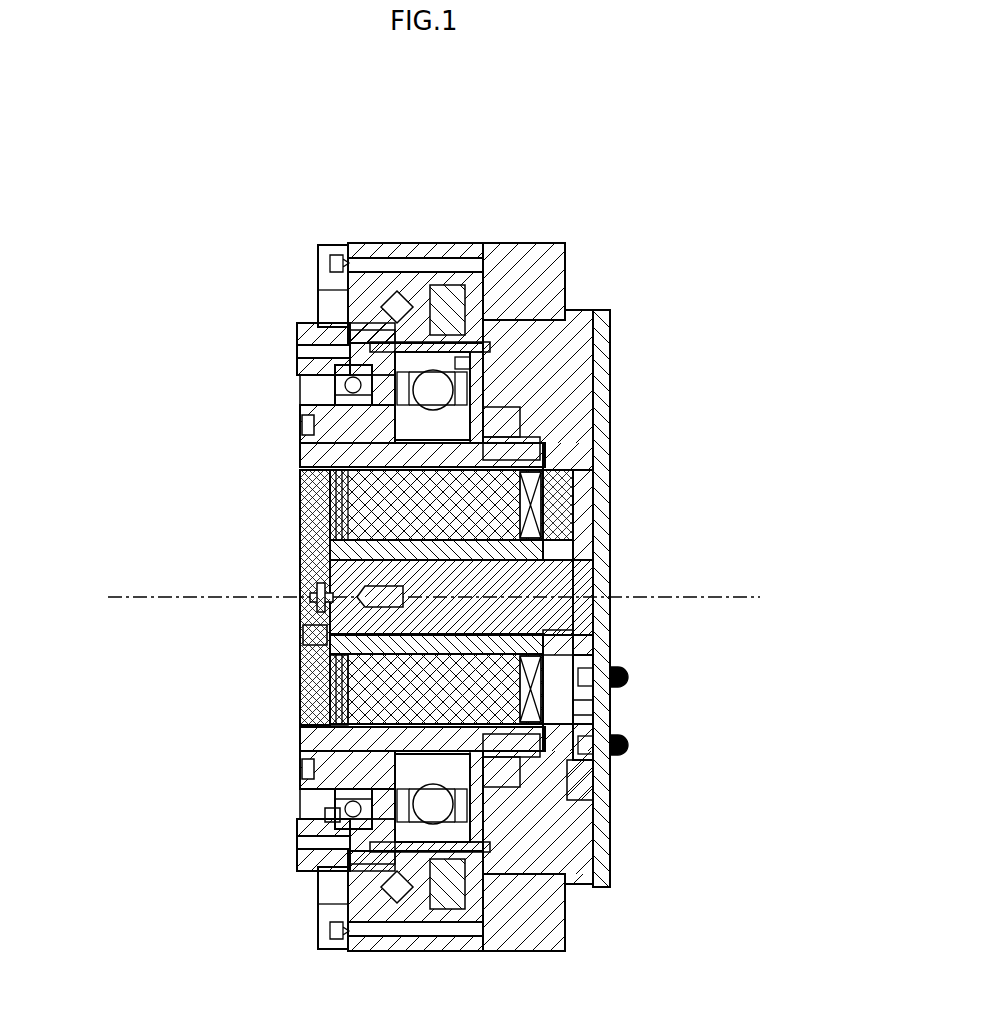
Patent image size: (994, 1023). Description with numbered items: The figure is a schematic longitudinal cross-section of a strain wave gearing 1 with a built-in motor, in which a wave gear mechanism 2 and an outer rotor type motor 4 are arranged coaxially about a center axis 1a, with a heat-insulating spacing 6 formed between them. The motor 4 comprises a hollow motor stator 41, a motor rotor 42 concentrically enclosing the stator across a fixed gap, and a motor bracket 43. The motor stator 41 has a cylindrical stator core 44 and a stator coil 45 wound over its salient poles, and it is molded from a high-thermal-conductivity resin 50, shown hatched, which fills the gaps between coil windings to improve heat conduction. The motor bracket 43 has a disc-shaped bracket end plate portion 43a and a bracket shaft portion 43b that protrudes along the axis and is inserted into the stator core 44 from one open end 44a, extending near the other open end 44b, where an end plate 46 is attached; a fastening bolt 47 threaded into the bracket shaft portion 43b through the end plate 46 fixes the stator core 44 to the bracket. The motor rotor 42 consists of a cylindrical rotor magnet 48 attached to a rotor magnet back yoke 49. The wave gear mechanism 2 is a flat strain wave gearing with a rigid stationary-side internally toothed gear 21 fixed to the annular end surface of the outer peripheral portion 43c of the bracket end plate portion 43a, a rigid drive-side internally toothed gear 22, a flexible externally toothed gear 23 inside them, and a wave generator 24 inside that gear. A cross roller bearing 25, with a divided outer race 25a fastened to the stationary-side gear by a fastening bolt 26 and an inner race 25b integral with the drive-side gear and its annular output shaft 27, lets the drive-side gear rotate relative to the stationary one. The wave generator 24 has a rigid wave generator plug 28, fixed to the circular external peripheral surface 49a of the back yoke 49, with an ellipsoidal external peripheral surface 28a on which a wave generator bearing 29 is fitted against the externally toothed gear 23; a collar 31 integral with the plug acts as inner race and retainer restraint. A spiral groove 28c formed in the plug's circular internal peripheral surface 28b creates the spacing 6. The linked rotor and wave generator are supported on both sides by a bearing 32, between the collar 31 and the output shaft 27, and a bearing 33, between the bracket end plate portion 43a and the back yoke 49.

The strain wave gearing with a built-in motor 1 is at (436, 513).
The center axis 1a is at (110, 588).
The wave gear mechanism 2 is at (262, 362).
The motor 4 is at (272, 512).
The spacing 6 is at (300, 469).
The stationary-side internally toothed gear 21 is at (568, 312).
The drive-side internally toothed gear 22 is at (320, 285).
The externally toothed gear 23 is at (497, 343).
The wave generator 24 is at (565, 400).
The cross roller bearing 25 is at (449, 239).
The outer race 25a is at (410, 236).
The inner race 25b is at (463, 330).
The fastening bolt 26 is at (365, 268).
The output shaft 27 is at (292, 323).
The wave generator plug 28 is at (560, 411).
The ellipsoidal external peripheral surface 28a is at (474, 368).
The circular internal peripheral surface 28b is at (510, 449).
The groove 28c is at (510, 424).
The wave generator bearing 29 is at (478, 346).
The collar 31 is at (300, 403).
The bearing 32 is at (330, 816).
The bearing 33 is at (580, 780).
The motor stator 41 is at (459, 589).
The motor rotor 42 is at (663, 708).
The motor bracket 43 is at (639, 530).
The bracket end plate portion 43a is at (585, 489).
The bracket shaft portion 43b is at (482, 580).
The outer peripheral portion 43c is at (545, 250).
The stator core 44 is at (446, 575).
The open end 44a is at (577, 597).
The open end 44b is at (300, 568).
The stator coil 45 is at (553, 639).
The end plate 46 is at (300, 633).
The fastening bolt 47 is at (300, 596).
The rotor magnet 48 is at (575, 734).
The rotor magnet back yoke 49 is at (592, 743).
The circular external peripheral surface 49a is at (302, 426).
The high-thermal-conductivity resin 50 is at (297, 660).